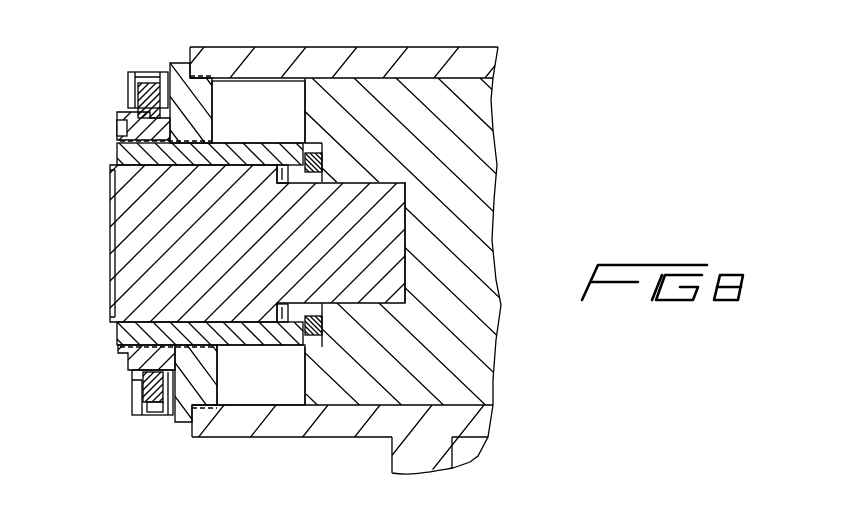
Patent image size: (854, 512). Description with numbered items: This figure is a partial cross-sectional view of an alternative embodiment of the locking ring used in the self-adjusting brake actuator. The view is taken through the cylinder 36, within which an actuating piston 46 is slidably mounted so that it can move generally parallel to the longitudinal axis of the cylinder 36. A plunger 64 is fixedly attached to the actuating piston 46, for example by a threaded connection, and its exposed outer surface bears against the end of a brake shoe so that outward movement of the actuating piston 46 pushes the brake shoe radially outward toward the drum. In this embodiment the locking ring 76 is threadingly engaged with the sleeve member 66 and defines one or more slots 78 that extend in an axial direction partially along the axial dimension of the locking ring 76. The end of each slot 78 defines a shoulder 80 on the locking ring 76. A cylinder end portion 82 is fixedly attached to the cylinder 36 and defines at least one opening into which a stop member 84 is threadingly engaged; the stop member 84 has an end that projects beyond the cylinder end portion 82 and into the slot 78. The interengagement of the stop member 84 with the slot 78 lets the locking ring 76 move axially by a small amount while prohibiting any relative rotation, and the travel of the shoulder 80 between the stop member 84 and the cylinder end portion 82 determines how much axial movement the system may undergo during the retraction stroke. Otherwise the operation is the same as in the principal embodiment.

The cylinder 36 is at (273, 55).
The actuating piston 46 is at (478, 171).
The plunger 64 is at (132, 240).
The sleeve member 66 is at (130, 157).
The locking ring 76 is at (120, 127).
The slot 78 is at (130, 114).
The shoulder 80 is at (168, 117).
The cylinder end portion 82 is at (200, 95).
The stop member 84 is at (148, 86).